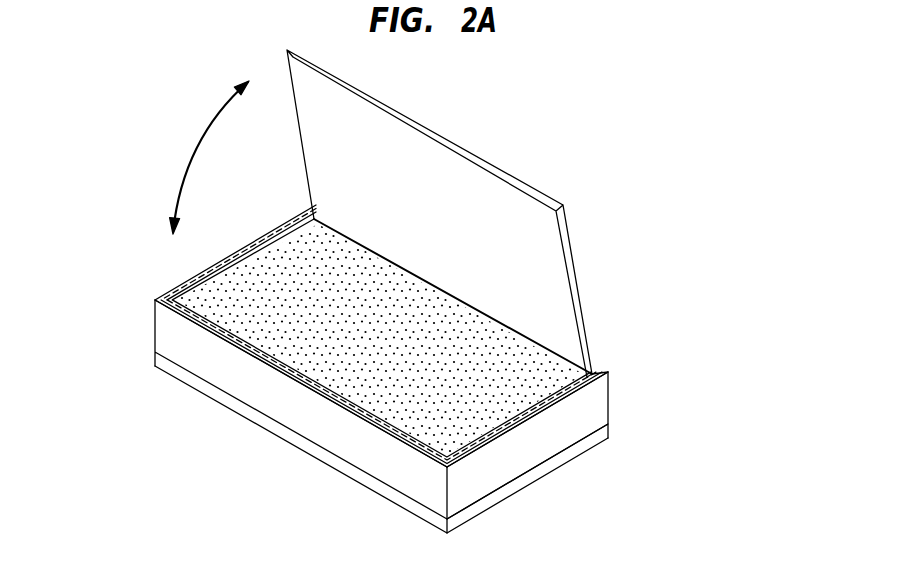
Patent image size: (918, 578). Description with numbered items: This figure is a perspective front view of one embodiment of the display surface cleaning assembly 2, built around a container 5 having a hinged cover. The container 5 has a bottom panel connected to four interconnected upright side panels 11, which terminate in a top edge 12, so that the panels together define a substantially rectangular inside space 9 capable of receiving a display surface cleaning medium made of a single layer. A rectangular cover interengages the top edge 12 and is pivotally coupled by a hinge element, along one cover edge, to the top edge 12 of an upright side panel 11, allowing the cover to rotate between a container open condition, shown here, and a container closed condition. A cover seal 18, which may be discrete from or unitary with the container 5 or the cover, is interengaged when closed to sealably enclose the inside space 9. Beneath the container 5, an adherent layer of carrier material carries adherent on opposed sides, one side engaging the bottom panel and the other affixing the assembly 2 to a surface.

The display surface cleaning assembly 2 is at (624, 379).
The container 5 is at (432, 487).
The inside space 9 is at (388, 352).
The upright side panels 11 is at (175, 337).
The top edge 12 is at (320, 393).
The cover seal 18 is at (284, 226).